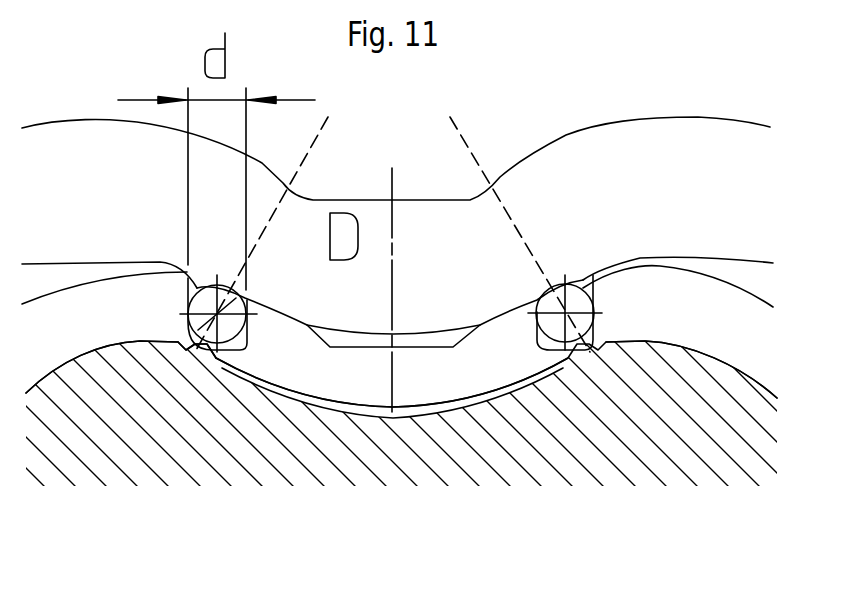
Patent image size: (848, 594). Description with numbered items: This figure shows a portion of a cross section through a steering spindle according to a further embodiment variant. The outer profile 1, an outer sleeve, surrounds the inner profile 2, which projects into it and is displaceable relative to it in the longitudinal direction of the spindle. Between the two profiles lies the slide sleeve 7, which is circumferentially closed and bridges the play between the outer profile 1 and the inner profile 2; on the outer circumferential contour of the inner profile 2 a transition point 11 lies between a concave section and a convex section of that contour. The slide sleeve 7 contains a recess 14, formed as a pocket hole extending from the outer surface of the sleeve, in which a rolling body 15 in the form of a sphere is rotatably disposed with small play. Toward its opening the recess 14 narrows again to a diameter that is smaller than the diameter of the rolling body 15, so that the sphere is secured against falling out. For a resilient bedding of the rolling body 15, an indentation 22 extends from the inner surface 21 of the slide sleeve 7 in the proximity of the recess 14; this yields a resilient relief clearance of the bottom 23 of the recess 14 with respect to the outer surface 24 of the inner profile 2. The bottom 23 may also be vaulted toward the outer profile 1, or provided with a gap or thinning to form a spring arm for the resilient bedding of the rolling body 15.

The outer profile 1 is at (655, 140).
The inner profile 2 is at (582, 452).
The slide sleeve 7 is at (735, 350).
The transition point 11 is at (205, 362).
The recess 14 is at (238, 347).
The rolling body 15 is at (197, 290).
The inner surface 21 is at (369, 413).
The indentation 22 is at (215, 327).
The bottom 23 is at (207, 346).
The outer surface 24 is at (420, 405).